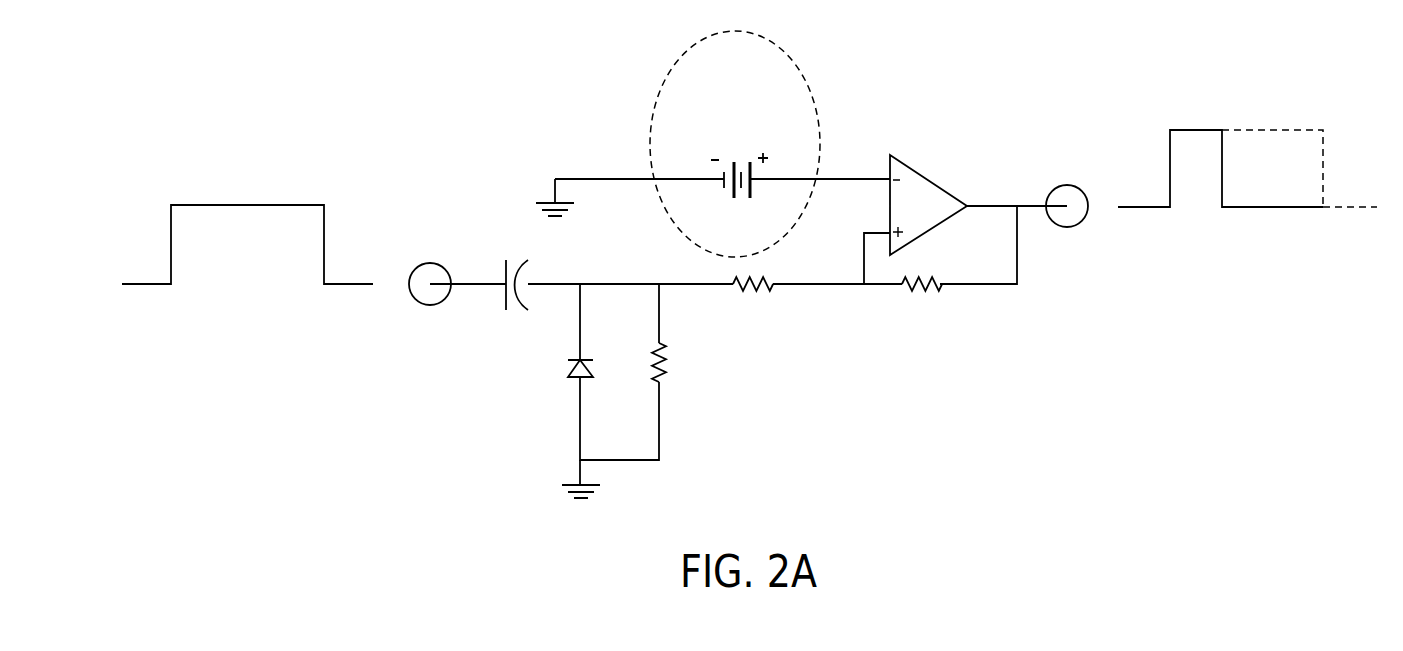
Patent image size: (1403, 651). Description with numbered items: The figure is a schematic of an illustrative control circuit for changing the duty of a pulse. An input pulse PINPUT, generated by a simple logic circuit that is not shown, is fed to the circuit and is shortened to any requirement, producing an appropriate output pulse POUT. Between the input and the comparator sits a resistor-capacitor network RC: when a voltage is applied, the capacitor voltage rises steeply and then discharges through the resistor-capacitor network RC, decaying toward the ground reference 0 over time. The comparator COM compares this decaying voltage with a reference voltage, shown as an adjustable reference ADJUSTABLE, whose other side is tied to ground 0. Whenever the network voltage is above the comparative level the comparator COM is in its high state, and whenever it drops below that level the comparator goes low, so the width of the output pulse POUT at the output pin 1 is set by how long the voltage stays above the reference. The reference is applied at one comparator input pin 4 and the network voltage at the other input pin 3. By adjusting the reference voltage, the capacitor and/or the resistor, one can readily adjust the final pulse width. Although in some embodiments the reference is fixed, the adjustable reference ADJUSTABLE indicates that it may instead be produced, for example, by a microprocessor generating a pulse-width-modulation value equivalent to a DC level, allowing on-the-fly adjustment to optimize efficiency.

The input pulse PINPUT is at (243, 313).
The output pulse POUT is at (1264, 244).
The adjustable reference ADJUSTABLE is at (824, 85).
The comparator COM is at (920, 188).
The resistor-capacitor network RC is at (700, 349).
The ground 0 is at (572, 355).
The comparator inverting input pin 4 is at (875, 166).
The comparator non-inverting input pin 3 is at (877, 245).
The comparator output pin 1 is at (984, 236).